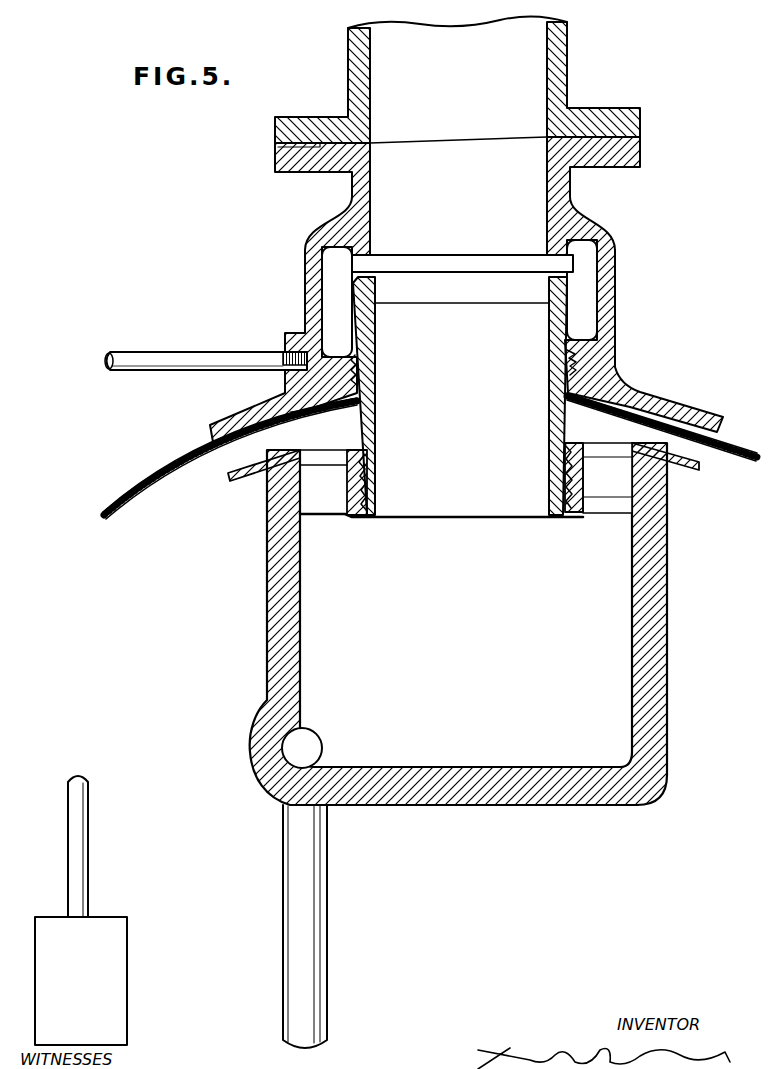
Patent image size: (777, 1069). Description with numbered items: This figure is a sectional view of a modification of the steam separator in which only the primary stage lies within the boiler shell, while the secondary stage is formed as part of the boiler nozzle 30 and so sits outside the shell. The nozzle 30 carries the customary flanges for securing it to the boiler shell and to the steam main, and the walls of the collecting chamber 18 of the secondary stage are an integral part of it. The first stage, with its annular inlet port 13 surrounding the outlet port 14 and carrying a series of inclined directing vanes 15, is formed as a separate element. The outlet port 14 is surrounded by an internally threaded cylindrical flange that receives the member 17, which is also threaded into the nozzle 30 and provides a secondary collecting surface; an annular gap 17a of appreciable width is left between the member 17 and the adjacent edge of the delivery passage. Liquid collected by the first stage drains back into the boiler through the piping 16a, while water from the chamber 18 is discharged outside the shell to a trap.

The inlet port 13 is at (611, 446).
The outlet port 14 is at (458, 520).
The directing vanes 15 is at (613, 486).
The piping 16a is at (310, 872).
The member 17 is at (380, 417).
The annular gap 17a is at (363, 267).
The collecting chamber 18 is at (331, 271).
The boiler nozzle 30 is at (616, 284).